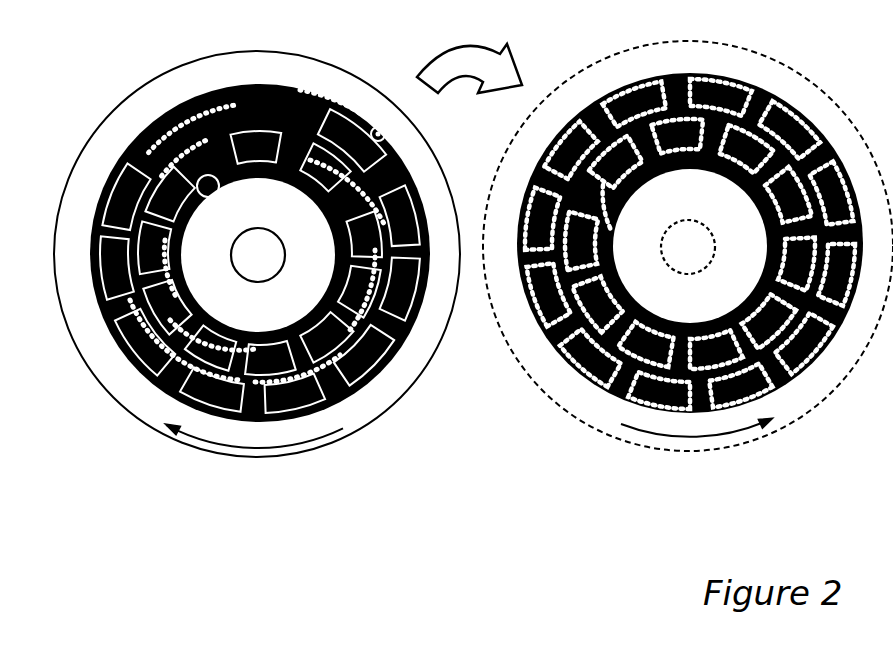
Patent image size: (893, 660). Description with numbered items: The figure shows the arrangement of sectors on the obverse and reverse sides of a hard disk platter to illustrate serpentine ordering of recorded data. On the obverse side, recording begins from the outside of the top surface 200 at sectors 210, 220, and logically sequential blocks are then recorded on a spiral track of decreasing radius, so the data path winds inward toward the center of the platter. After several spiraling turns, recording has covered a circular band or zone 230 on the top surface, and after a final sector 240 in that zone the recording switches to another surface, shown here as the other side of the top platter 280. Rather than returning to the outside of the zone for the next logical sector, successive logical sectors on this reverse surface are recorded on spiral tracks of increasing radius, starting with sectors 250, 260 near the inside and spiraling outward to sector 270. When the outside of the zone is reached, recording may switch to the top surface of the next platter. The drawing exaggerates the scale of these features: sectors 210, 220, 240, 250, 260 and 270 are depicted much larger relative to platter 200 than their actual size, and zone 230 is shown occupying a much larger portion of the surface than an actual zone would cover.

The top surface 200 is at (257, 279).
The sector 210 is at (113, 180).
The sector 220 is at (94, 258).
The zone 230 is at (378, 131).
The final sector 240 is at (228, 180).
The sector 250 is at (175, 208).
The sector 260 is at (692, 142).
The sector 270 is at (183, 114).
The other side of the top platter 280 is at (688, 269).